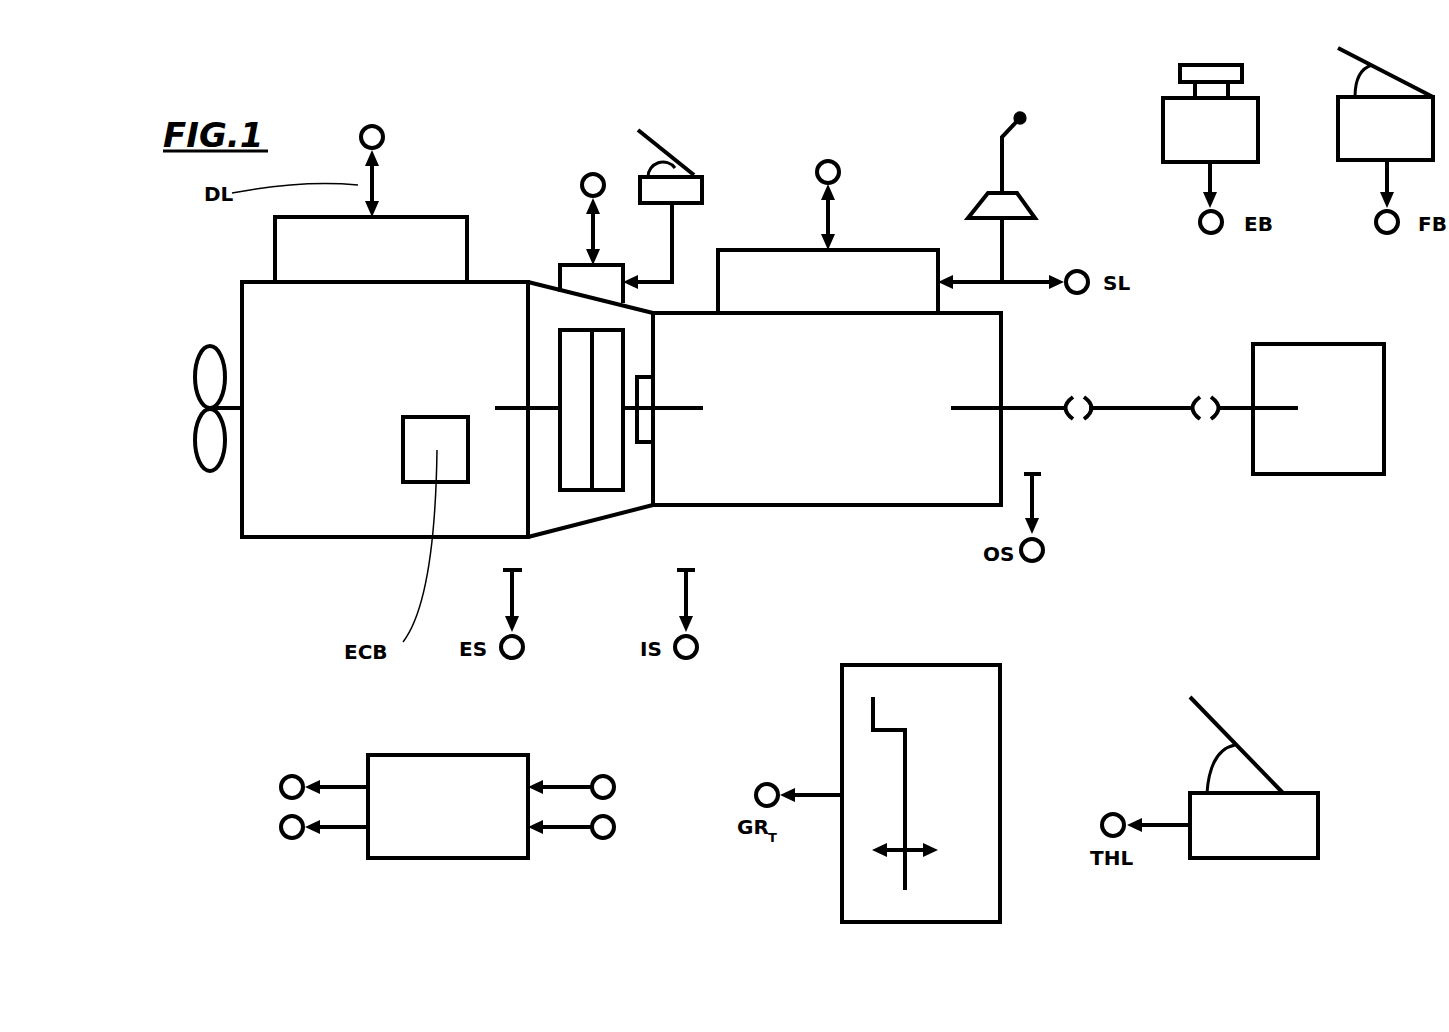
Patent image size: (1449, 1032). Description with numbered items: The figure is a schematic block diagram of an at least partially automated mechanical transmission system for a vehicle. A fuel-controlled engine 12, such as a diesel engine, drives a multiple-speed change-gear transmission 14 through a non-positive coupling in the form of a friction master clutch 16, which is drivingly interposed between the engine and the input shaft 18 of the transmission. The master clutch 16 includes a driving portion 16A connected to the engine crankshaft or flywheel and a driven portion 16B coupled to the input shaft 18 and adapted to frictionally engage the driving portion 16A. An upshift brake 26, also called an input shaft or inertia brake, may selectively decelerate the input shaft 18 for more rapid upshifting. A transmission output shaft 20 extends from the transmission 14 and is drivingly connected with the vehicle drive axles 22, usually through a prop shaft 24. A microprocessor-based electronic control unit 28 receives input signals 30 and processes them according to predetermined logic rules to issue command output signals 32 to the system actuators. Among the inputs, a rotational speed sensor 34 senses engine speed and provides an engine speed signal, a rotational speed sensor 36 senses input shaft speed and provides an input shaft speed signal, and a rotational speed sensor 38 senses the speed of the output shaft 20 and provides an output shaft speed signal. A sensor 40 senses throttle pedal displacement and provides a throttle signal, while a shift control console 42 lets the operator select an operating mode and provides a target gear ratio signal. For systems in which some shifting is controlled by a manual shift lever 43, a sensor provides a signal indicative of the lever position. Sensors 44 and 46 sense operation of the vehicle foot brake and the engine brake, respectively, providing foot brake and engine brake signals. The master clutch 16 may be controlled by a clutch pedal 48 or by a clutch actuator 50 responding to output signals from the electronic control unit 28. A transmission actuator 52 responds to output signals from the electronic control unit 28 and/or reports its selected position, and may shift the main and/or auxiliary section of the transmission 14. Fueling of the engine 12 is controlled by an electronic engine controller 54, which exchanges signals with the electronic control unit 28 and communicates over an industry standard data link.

The fuel-controlled engine 12 is at (370, 503).
The multiple-speed change-gear transmission 14 is at (907, 474).
The non-positive coupling 16 is at (592, 518).
The driving portion 16A is at (577, 362).
The driven portion 16B is at (607, 442).
The input shaft 18 is at (687, 412).
The transmission output shaft 20 is at (1032, 401).
The vehicle drive axles 22 is at (1320, 377).
The prop shaft 24 is at (1138, 419).
The upshift brake 26 is at (647, 393).
The electronic control unit 28 is at (432, 842).
The input signals 30 is at (558, 870).
The command output signals 32 is at (337, 870).
The rotational speed sensor 34 is at (513, 585).
The rotational speed sensor 36 is at (687, 593).
The rotational speed sensor 38 is at (1034, 507).
The sensor 40 is at (1253, 825).
The shift control console 42 is at (797, 698).
The manual shift lever 43 is at (1017, 152).
The sensor 44 is at (1387, 128).
The sensor 46 is at (1197, 130).
The clutch pedal 48 is at (690, 195).
The clutch actuator 50 is at (598, 287).
The transmission actuator 52 is at (875, 275).
The electronic engine controller 54 is at (403, 250).